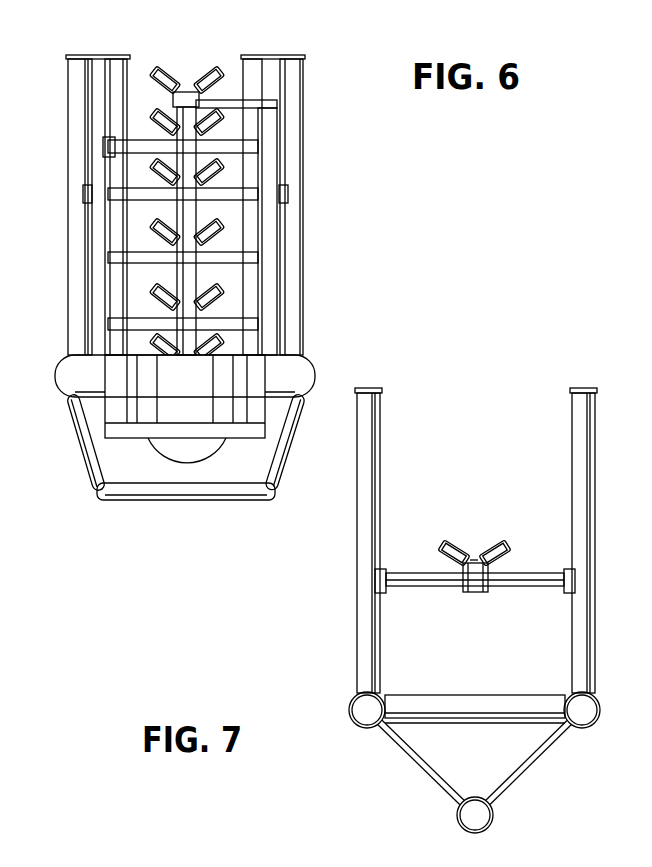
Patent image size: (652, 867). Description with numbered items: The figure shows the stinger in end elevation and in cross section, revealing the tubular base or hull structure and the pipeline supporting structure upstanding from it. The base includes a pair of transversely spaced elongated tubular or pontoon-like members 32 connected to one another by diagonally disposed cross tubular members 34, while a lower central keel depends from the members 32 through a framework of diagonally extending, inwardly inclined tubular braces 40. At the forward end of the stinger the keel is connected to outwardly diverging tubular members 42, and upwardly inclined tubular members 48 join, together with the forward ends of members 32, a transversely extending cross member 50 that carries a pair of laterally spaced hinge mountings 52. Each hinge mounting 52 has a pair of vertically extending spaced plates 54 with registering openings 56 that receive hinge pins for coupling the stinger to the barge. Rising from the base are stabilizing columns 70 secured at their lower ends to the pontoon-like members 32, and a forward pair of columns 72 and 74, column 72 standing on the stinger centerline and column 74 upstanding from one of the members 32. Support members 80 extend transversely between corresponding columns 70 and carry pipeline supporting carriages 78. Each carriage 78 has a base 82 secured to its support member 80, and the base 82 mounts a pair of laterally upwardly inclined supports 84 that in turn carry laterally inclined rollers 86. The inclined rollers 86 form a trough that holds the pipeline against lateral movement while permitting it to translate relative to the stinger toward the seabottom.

In FIG. 6, the stabilizing columns 70 is at (300, 142).
In FIG. 7, the stabilizing columns 70 is at (572, 395).
In FIG. 6, the forward column 72 is at (196, 211).
In FIG. 6, the forward column 74 is at (262, 236).
In FIG. 6, the pipeline supporting carriage 78 is at (210, 68).
In FIG. 7, the pipeline supporting carriage 78 is at (504, 542).
In FIG. 6, the support member 80 is at (227, 265).
In FIG. 7, the support member 80 is at (405, 586).
In FIG. 6, the elongated tubular or pontoon-like member 32 is at (300, 363).
In FIG. 7, the elongated tubular or pontoon-like member 32 is at (349, 712).
In FIG. 6, the hinge mounting 52 is at (90, 408).
In FIG. 6, the vertically extending spaced plate 54 is at (108, 373).
In FIG. 6, the registering opening 56 is at (240, 427).
In FIG. 6, the transversely extending cross member 50 is at (71, 442).
In FIG. 6, the upwardly inclined tubular member 48 is at (256, 485).
In FIG. 6, the outwardly diverging tubular member 42 is at (220, 502).
In FIG. 7, the cross tubular member 34 is at (503, 705).
In FIG. 7, the tubular brace 40 is at (448, 786).
In FIG. 7, the base 82 is at (490, 583).
In FIG. 7, the laterally upwardly inclined support 84 is at (452, 568).
In FIG. 7, the laterally inclined roller 86 is at (484, 546).